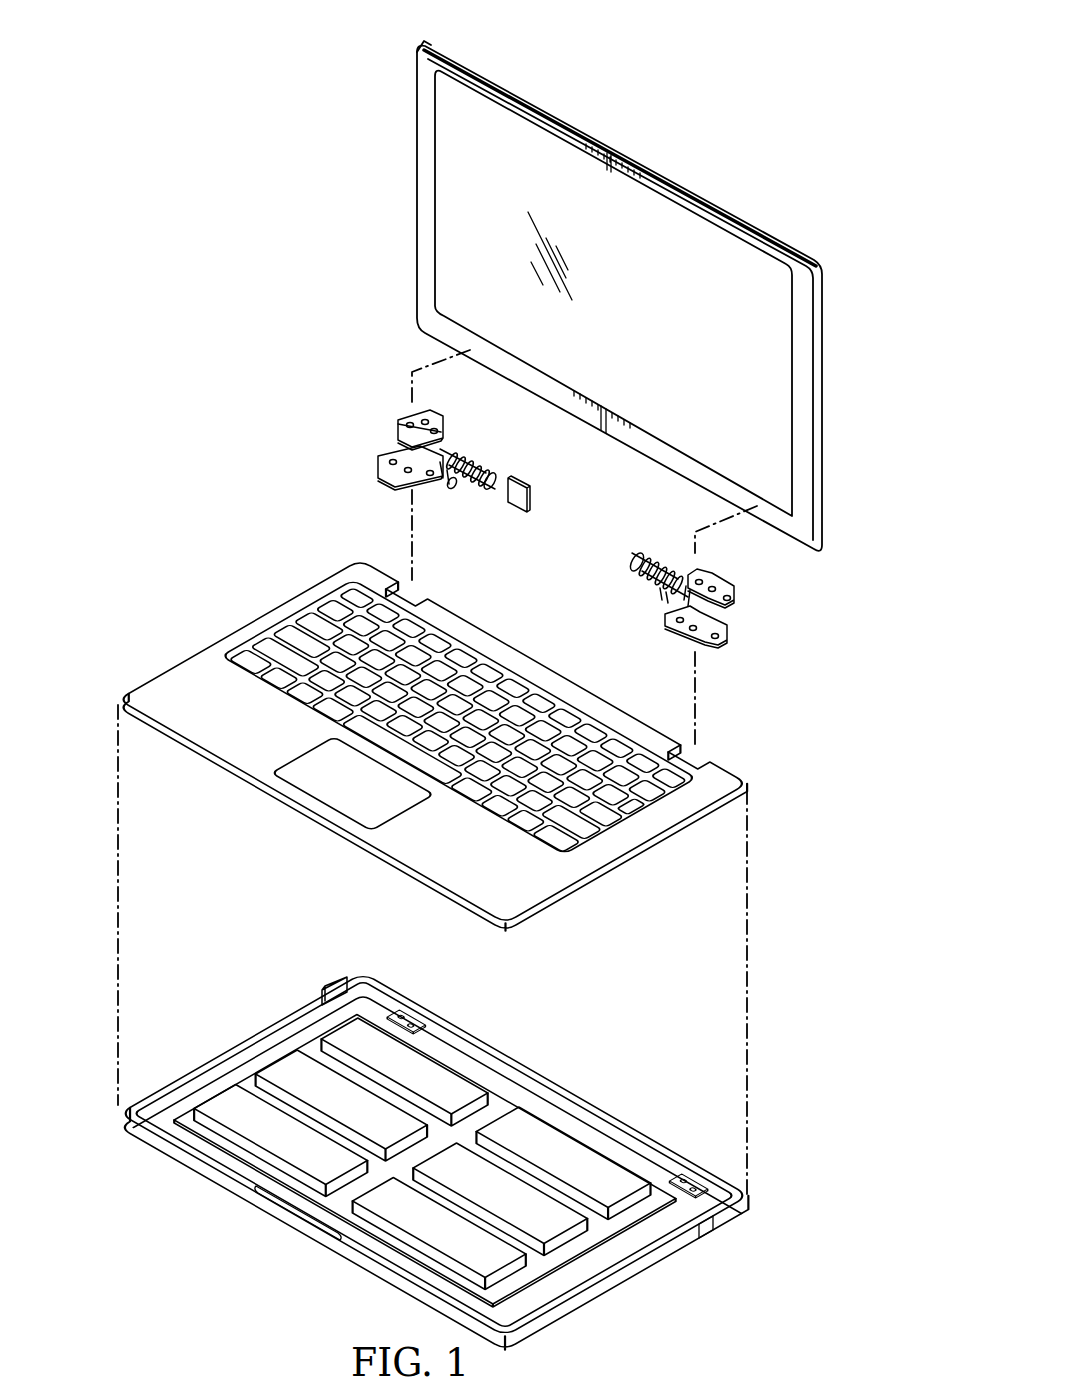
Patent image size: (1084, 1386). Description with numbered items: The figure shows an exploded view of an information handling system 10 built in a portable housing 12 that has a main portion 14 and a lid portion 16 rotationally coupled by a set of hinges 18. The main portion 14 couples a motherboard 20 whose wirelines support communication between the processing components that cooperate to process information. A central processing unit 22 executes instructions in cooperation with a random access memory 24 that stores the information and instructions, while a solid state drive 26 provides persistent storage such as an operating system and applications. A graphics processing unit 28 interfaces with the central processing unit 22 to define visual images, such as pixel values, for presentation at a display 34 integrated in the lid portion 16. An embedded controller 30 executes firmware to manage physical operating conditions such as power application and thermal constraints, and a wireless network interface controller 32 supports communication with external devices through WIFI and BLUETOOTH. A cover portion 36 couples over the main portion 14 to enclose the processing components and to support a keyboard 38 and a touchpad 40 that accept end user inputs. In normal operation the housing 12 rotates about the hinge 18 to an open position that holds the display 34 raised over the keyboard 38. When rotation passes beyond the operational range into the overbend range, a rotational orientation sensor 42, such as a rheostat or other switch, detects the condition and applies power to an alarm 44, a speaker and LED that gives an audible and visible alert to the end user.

The information handling system 10 is at (190, 112).
The housing 12 is at (832, 402).
The main portion 14 is at (297, 1231).
The lid portion 16 is at (657, 164).
The hinge 18 is at (750, 625).
The motherboard 20 is at (218, 1151).
The central processing unit (CPU) 22 is at (452, 1081).
The random access memory (RAM) 24 is at (283, 1067).
The solid state drive (SSD) 26 is at (222, 1103).
The graphics processing unit (GPU) 28 is at (612, 1174).
The embedded controller 30 is at (557, 1226).
The wireless network interface controller (WNIC) 32 is at (495, 1259).
The display 34 is at (631, 339).
The cover portion 36 is at (172, 671).
The keyboard 38 is at (458, 717).
The touchpad 40 is at (353, 784).
The rotational orientation sensor 42 is at (532, 503).
The alarm 44 is at (337, 991).